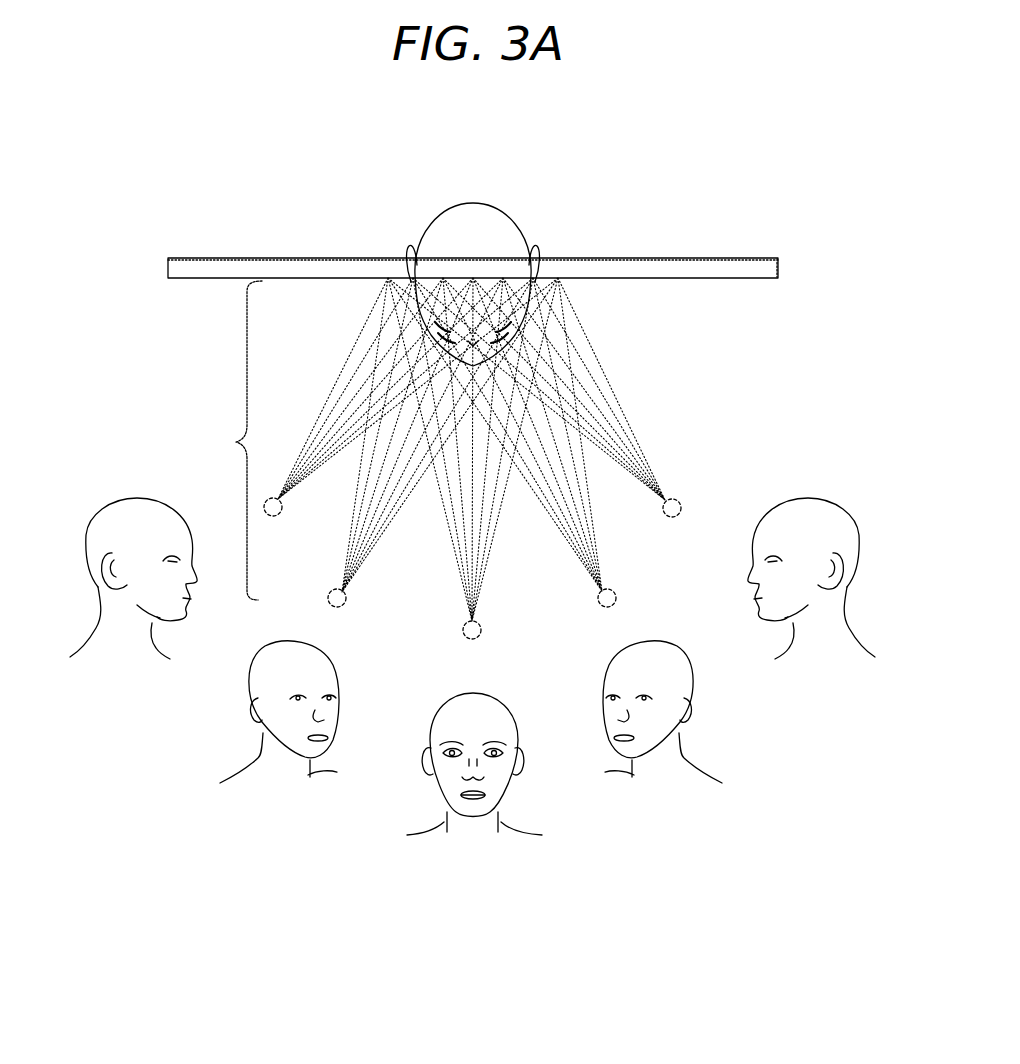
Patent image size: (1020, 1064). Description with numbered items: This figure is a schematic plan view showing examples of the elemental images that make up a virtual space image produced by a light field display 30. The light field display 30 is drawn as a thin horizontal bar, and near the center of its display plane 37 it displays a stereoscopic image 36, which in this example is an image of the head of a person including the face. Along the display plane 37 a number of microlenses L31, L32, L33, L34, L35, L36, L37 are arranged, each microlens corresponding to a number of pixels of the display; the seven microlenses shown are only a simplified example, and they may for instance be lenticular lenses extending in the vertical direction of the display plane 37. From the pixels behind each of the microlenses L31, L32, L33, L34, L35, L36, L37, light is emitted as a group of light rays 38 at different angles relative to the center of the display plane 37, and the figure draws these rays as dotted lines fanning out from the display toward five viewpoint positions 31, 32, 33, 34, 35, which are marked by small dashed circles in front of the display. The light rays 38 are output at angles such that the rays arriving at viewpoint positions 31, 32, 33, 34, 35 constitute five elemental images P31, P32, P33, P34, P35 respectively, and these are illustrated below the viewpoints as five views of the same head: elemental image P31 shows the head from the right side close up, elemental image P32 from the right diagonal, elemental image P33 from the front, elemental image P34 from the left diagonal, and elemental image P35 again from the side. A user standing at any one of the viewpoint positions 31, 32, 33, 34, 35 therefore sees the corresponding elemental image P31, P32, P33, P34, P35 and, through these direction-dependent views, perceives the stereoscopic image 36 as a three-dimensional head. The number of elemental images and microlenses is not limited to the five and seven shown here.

The light field display 30 is at (752, 267).
The viewpoint position 31 is at (275, 517).
The viewpoint position 32 is at (347, 600).
The viewpoint position 33 is at (481, 630).
The viewpoint position 34 is at (616, 594).
The viewpoint position 35 is at (681, 502).
The stereoscopic image 36 is at (473, 205).
The display plane 37 is at (730, 279).
The group of light rays 38 is at (233, 440).
The microlens L31 is at (388, 278).
The microlens L32 is at (413, 278).
The microlens L33 is at (443, 278).
The microlens L34 is at (473, 278).
The microlens L35 is at (503, 278).
The microlens L36 is at (533, 278).
The microlens L37 is at (558, 278).
The elemental image P31 is at (112, 665).
The elemental image P32 is at (275, 792).
The elemental image P33 is at (477, 850).
The elemental image P34 is at (670, 790).
The elemental image P35 is at (835, 667).